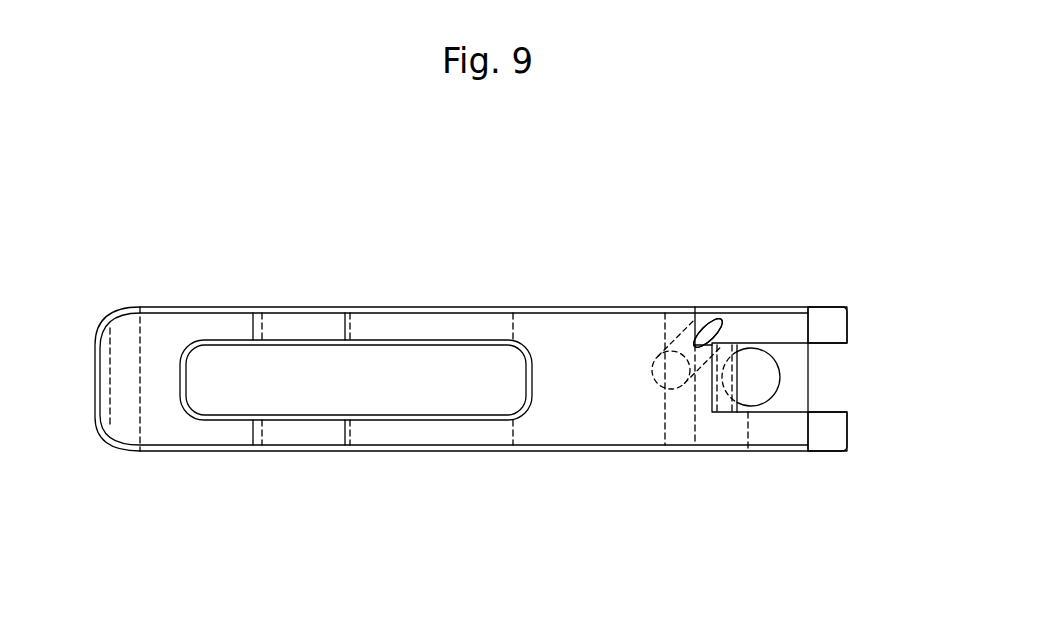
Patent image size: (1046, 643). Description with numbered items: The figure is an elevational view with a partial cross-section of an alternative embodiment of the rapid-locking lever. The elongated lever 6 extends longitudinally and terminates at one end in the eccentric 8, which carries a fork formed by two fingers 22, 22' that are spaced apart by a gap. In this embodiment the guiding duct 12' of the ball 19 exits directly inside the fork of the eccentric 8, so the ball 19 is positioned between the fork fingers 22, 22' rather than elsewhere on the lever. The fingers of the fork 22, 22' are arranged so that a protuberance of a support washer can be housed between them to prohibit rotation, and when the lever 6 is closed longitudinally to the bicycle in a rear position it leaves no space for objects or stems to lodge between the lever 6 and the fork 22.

The lever 6 is at (560, 353).
The guiding duct 12' is at (659, 289).
The eccentric 8 is at (758, 350).
The fork 22 is at (864, 266).
The fork finger 22' is at (795, 469).
The ball 19 is at (703, 345).